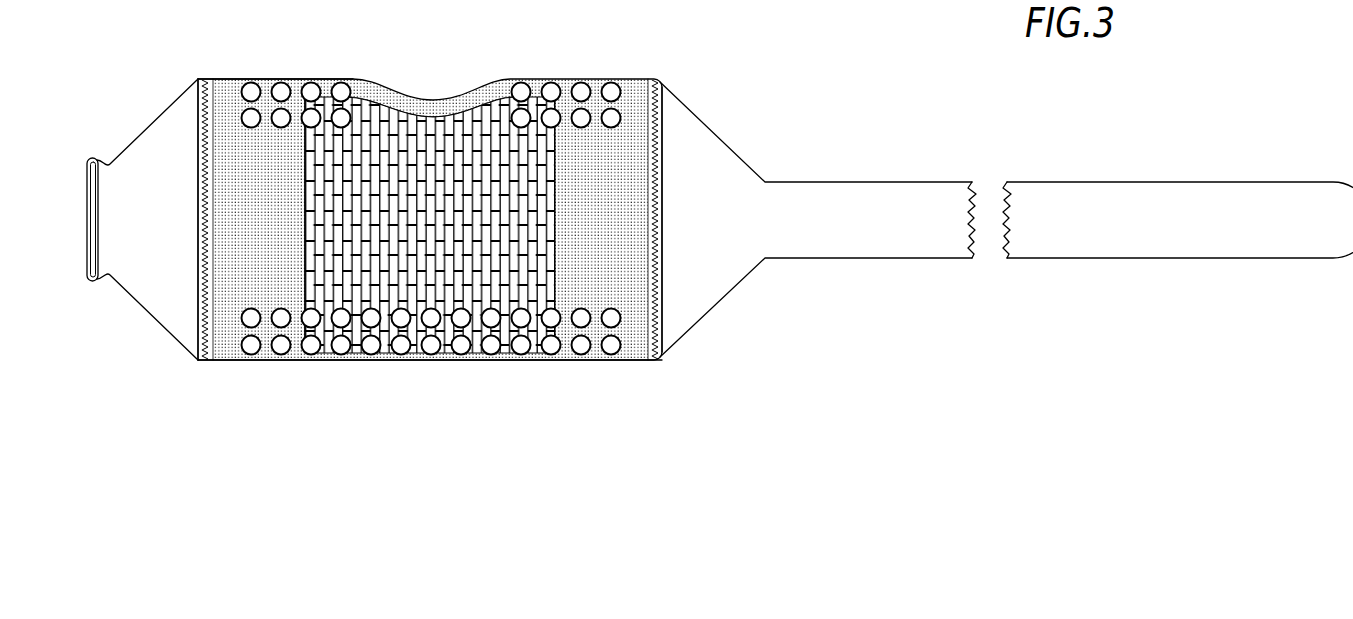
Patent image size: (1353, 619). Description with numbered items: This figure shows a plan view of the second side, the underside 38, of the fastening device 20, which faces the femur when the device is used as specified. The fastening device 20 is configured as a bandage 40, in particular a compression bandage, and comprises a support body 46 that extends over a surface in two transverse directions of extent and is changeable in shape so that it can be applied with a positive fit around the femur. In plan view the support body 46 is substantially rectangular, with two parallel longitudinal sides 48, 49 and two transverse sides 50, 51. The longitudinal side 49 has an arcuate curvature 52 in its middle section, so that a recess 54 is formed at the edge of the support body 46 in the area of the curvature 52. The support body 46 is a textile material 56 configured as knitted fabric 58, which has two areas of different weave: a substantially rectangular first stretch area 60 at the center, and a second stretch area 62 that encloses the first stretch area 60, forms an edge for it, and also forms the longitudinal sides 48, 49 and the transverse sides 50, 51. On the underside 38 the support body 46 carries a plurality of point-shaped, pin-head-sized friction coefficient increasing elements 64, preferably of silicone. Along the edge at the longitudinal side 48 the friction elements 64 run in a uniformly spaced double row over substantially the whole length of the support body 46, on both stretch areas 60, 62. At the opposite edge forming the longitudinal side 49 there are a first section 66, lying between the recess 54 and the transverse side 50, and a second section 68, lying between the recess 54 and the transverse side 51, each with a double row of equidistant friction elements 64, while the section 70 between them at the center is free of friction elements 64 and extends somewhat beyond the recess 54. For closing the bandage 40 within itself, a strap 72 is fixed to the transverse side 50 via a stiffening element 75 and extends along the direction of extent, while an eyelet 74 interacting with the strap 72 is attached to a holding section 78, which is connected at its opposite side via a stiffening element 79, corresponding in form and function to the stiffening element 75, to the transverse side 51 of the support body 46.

The fastening device 20 is at (527, 375).
The underside 38 is at (630, 177).
The bandage 40 is at (764, 155).
The support body 46 is at (626, 286).
The longitudinal side 48 is at (440, 362).
The longitudinal side 49 is at (327, 79).
The transverse side 50 is at (648, 220).
The transverse side 51 is at (213, 302).
The arcuate curvature 52 is at (440, 93).
The recess 54 is at (420, 88).
The textile material 56 is at (630, 148).
The knitted fabric 58 is at (628, 256).
The first stretch area 60 is at (362, 284).
The second stretch area 62 is at (262, 280).
The friction coefficient increasing elements 64 is at (280, 99).
The first section 66 is at (623, 101).
The second section 68 is at (229, 97).
The section 70 is at (462, 108).
The strap 72 is at (1070, 200).
The eyelet 74 is at (87, 177).
The stiffening element 75 is at (655, 362).
The holding section 78 is at (147, 157).
The stiffening element 79 is at (206, 360).